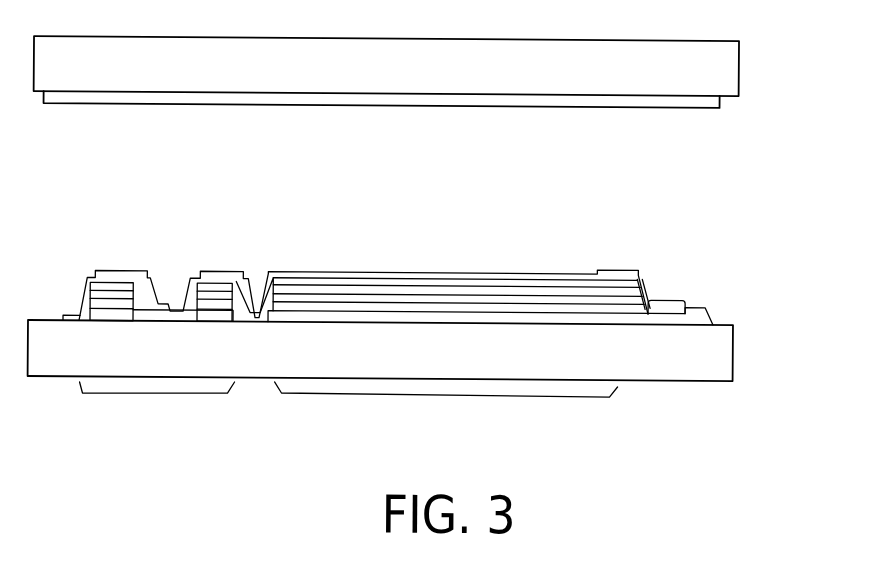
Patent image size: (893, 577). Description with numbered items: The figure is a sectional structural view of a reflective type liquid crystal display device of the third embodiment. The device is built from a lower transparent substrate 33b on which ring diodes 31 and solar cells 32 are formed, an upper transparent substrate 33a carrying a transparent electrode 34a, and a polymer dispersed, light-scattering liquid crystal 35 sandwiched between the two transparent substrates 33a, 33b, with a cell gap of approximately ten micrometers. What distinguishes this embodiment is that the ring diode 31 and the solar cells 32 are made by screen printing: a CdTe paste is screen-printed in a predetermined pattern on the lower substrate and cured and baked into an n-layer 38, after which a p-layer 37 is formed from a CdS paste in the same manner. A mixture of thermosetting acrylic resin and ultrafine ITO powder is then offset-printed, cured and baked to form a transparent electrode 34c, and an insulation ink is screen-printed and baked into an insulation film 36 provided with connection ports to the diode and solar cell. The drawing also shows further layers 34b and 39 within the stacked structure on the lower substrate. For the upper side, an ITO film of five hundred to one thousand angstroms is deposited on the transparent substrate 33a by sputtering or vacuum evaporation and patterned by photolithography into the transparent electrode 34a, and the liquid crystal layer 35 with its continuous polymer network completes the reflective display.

The ring diode 31 is at (150, 402).
The solar cell 32 is at (445, 406).
The transparent substrate 33a is at (717, 62).
The transparent substrate 33b is at (647, 344).
The transparent electrode 34a is at (705, 96).
The lower alignment film 34b is at (545, 272).
The transparent electrode 34c is at (620, 289).
The light-scattering liquid crystal 35 is at (508, 179).
The insulation film 36 is at (565, 276).
The p-layer 37 is at (622, 301).
The n-layer 38 is at (672, 293).
The gate insulating film 39 is at (647, 315).